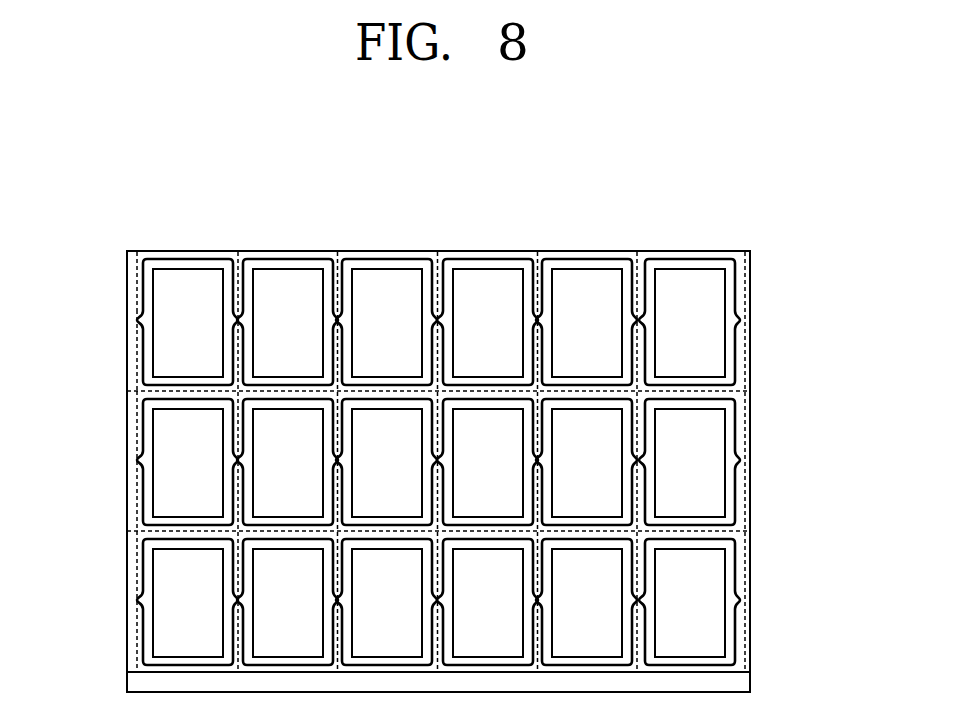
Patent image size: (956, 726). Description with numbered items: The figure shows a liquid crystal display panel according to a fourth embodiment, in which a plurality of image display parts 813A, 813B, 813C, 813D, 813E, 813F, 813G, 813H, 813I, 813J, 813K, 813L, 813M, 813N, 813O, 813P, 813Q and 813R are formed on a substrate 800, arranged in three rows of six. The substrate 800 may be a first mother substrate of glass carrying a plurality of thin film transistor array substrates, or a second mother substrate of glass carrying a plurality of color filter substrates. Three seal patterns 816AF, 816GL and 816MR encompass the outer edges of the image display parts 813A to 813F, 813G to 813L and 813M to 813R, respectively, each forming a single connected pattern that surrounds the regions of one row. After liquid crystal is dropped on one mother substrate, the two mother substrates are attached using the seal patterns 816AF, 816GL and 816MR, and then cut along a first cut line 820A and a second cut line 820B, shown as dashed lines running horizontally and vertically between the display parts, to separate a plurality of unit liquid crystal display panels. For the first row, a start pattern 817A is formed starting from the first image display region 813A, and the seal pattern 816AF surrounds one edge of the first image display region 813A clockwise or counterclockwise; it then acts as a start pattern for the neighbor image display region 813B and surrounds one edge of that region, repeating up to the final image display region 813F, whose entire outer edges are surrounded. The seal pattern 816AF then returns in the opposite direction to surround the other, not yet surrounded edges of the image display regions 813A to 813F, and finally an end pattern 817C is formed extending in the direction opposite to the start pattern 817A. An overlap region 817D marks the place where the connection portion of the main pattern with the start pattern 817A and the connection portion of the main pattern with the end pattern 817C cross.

The substrate 800 is at (740, 680).
The first image display region 813A is at (212, 325).
The neighbor image display region 813B is at (312, 325).
The image display part 813C is at (411, 325).
The image display part 813D is at (512, 325).
The image display part 813E is at (611, 325).
The final image display region 813F is at (714, 325).
The image display part 813G is at (212, 465).
The image display part 813H is at (312, 465).
The image display part 813I is at (411, 465).
The image display part 813J is at (512, 465).
The image display part 813K is at (611, 465).
The image display part 813L is at (714, 465).
The image display part 813M is at (212, 605).
The image display part 813N is at (312, 605).
The image display part 813O is at (411, 605).
The image display part 813P is at (512, 605).
The image display part 813Q is at (611, 605).
The image display part 813R is at (714, 605).
The seal pattern 816AF is at (733, 319).
The seal pattern 816GL is at (140, 440).
The seal pattern 816MR is at (140, 580).
The start pattern 817A is at (135, 354).
The end pattern 817C is at (136, 300).
The overlap region 817D is at (138, 320).
The first cut line 820A is at (737, 388).
The second cut line 820B is at (637, 268).